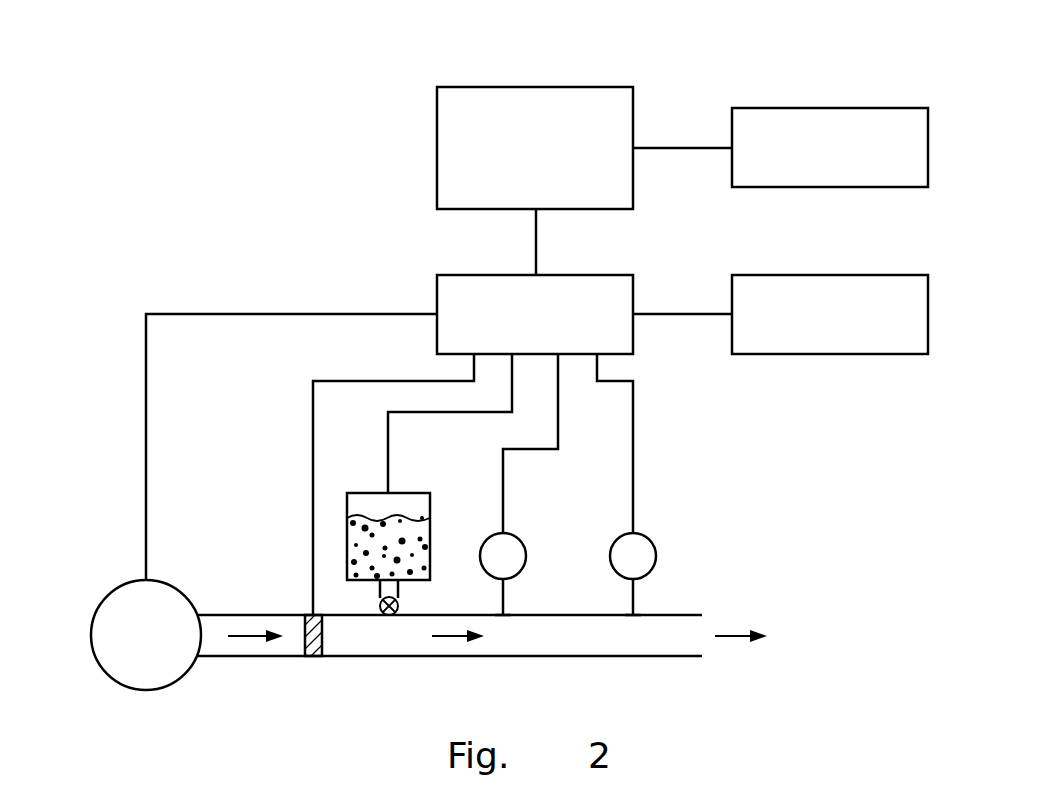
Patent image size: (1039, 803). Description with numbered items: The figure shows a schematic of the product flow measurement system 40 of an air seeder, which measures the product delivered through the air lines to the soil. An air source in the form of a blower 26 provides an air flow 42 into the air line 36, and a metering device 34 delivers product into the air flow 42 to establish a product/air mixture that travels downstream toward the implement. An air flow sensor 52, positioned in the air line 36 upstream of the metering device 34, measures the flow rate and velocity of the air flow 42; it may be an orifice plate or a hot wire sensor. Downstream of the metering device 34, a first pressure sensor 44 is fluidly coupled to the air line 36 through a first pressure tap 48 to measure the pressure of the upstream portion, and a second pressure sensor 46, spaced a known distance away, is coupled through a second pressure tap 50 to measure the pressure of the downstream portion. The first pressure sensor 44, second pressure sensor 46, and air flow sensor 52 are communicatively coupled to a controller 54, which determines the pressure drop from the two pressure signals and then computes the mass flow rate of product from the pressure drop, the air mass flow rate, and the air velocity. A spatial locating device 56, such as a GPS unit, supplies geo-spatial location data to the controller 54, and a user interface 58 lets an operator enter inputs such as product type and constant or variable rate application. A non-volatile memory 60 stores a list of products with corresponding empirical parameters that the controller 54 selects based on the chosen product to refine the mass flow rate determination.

The product flow measurement system 40 is at (185, 128).
The spatial locating device 56 is at (573, 87).
The non-volatile memory 60 is at (840, 108).
The controller 54 is at (447, 275).
The user interface 58 is at (928, 313).
The blower 26 is at (102, 598).
The air line 36 is at (273, 657).
The air flow 42 is at (247, 630).
The air flow sensor 52 is at (323, 638).
The metering device 34 is at (432, 525).
The first pressure sensor 44 is at (520, 540).
The second pressure sensor 46 is at (650, 540).
The first pressure tap 48 is at (505, 614).
The second pressure tap 50 is at (637, 614).